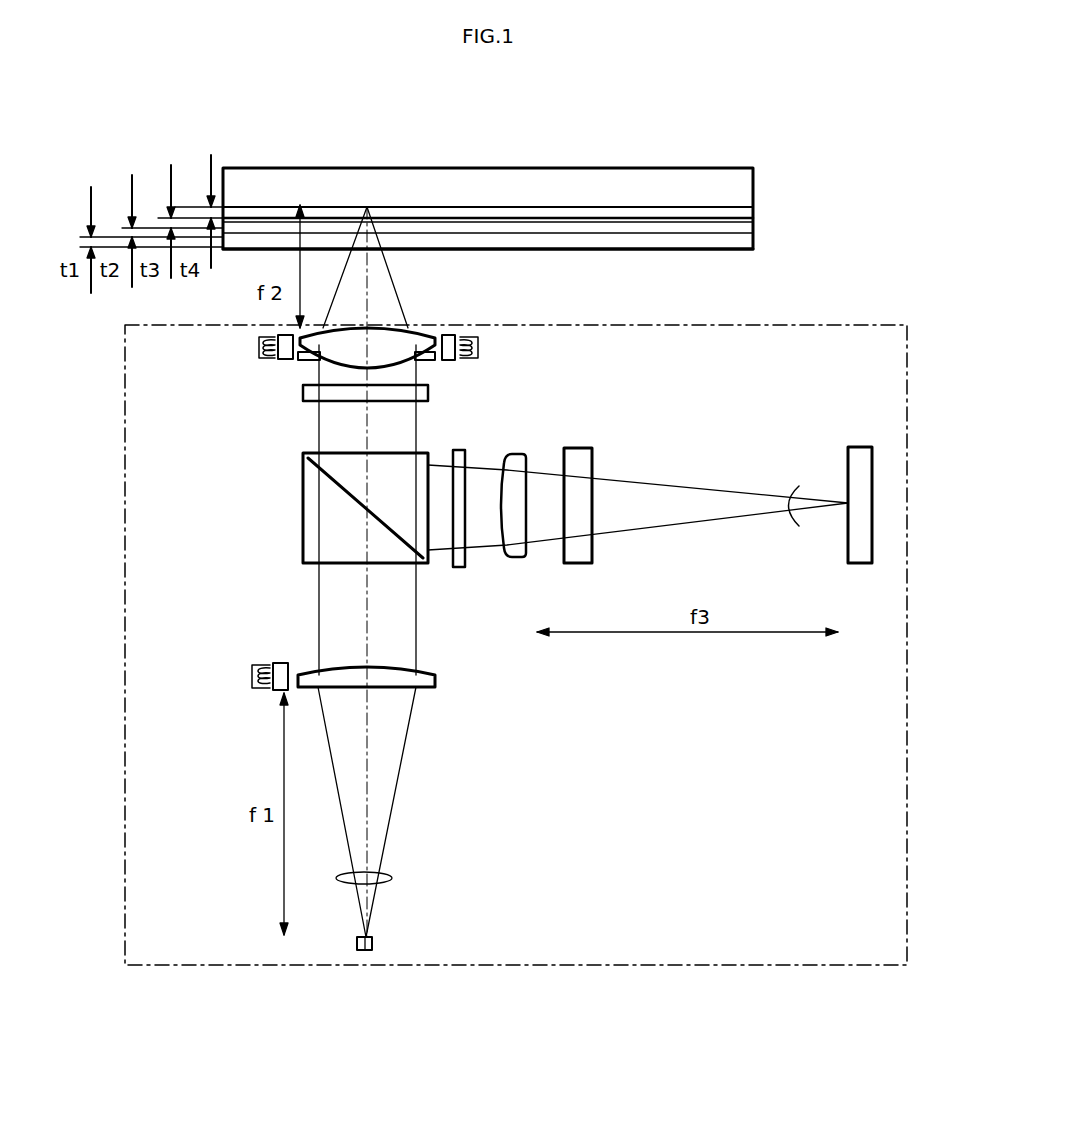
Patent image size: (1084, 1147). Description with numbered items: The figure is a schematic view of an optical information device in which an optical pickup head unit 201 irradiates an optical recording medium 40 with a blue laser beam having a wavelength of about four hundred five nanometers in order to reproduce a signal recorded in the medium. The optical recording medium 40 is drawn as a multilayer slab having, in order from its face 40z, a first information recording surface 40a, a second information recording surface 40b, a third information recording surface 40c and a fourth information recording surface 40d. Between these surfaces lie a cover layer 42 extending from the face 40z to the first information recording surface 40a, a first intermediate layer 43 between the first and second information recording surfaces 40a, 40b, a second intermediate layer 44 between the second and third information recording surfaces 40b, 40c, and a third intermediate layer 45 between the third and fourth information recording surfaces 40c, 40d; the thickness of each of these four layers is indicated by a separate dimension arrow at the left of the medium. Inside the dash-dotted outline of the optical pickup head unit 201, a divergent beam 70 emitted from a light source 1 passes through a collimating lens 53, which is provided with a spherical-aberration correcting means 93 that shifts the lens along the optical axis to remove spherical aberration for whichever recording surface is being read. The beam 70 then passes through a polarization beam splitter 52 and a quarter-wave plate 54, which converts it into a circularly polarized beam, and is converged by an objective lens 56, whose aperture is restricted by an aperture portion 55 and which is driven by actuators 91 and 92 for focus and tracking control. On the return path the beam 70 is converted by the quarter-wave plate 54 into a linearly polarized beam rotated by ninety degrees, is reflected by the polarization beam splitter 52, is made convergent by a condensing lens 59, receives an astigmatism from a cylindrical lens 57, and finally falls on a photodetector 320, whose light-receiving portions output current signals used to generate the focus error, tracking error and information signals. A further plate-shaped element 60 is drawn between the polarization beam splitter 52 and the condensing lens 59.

The light source 1 is at (377, 938).
The optical recording medium 40 is at (660, 250).
The first information recording surface 40a is at (755, 233).
The second information recording surface 40b is at (755, 222).
The third information recording surface 40c is at (755, 218).
The fourth information recording surface 40d is at (755, 207).
The face 40z is at (720, 250).
The cover layer 42 is at (567, 242).
The first intermediate layer 43 is at (610, 232).
The second intermediate layer 44 is at (645, 223).
The third intermediate layer 45 is at (667, 213).
The polarization beam splitter 52 is at (293, 520).
The collimating lens 53 is at (307, 665).
The quarter-wave plate 54 is at (302, 393).
The aperture portion 55 is at (298, 360).
The objective lens 56 is at (432, 328).
The cylindrical lens 57 is at (578, 448).
The condensing lens 59 is at (522, 453).
The plate 60 is at (462, 450).
The beam 70 is at (775, 520).
The actuator 91 is at (255, 345).
The actuator 92 is at (482, 342).
The spherical-aberration correcting means 93 is at (248, 681).
The optical pickup head unit 201 is at (820, 327).
The photodetector 320 is at (859, 430).